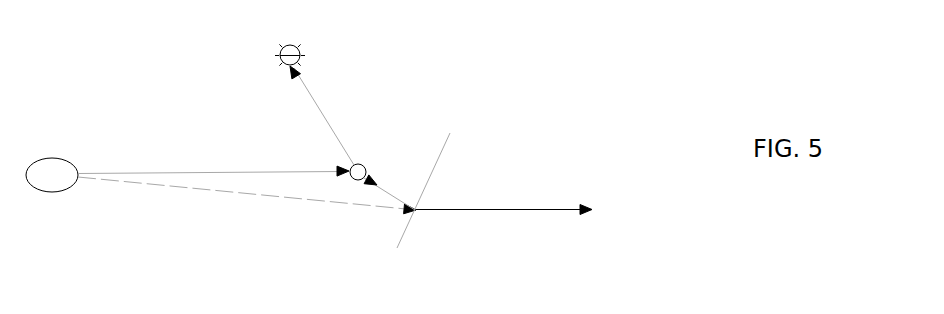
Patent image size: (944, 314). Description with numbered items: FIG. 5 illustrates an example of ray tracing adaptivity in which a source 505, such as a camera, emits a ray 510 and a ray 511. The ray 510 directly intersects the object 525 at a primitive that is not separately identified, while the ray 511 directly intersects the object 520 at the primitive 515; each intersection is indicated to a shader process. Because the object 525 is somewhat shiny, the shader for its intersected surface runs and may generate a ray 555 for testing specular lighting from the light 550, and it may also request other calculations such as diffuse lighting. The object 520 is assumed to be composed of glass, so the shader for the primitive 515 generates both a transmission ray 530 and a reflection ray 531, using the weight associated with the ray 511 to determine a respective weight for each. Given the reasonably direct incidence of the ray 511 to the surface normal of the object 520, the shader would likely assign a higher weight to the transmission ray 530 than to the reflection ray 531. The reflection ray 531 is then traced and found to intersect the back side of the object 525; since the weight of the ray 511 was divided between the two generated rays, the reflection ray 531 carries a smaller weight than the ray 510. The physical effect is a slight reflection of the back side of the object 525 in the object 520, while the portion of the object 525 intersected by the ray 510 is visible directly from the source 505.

The source 505 is at (60, 158).
The ray 510 is at (115, 173).
The ray 511 is at (124, 182).
The primitive 515 is at (416, 209).
The object 520 is at (404, 246).
The object 525 is at (351, 163).
The transmission ray 530 is at (507, 208).
The reflection ray 531 is at (380, 179).
The light 550 is at (281, 48).
The ray 555 is at (312, 98).